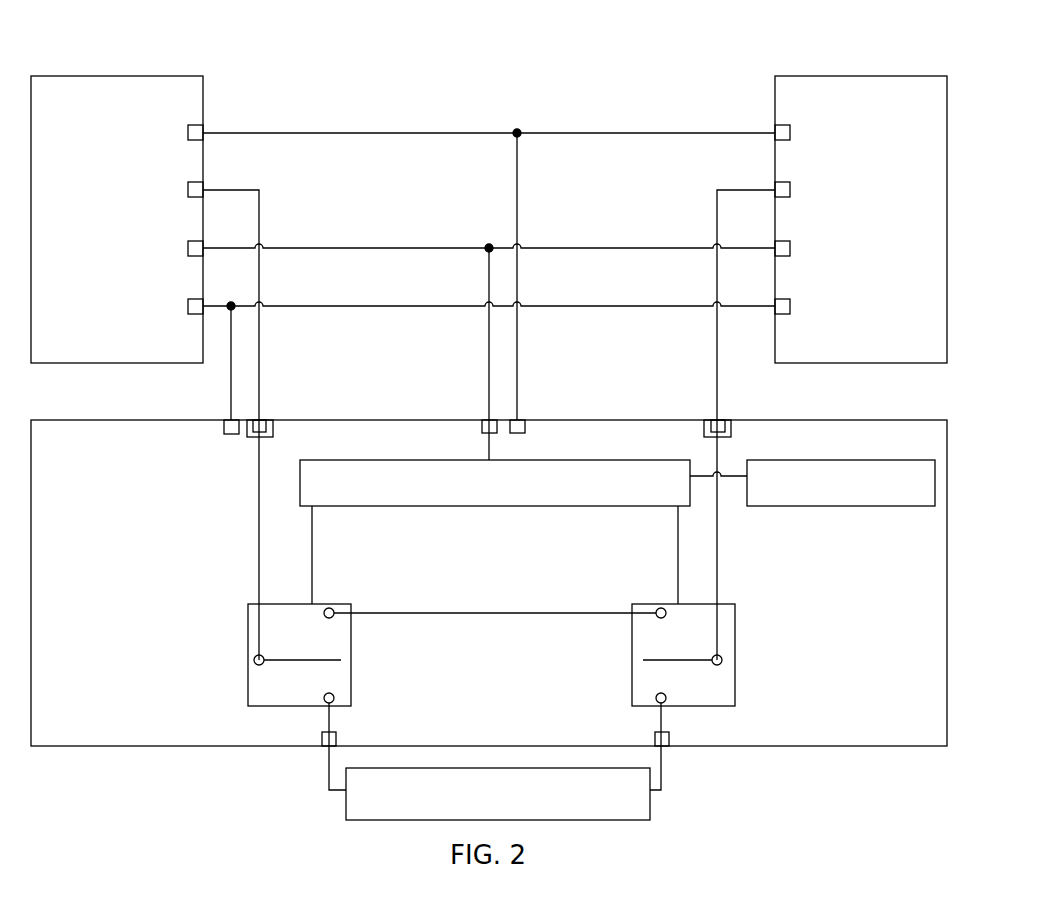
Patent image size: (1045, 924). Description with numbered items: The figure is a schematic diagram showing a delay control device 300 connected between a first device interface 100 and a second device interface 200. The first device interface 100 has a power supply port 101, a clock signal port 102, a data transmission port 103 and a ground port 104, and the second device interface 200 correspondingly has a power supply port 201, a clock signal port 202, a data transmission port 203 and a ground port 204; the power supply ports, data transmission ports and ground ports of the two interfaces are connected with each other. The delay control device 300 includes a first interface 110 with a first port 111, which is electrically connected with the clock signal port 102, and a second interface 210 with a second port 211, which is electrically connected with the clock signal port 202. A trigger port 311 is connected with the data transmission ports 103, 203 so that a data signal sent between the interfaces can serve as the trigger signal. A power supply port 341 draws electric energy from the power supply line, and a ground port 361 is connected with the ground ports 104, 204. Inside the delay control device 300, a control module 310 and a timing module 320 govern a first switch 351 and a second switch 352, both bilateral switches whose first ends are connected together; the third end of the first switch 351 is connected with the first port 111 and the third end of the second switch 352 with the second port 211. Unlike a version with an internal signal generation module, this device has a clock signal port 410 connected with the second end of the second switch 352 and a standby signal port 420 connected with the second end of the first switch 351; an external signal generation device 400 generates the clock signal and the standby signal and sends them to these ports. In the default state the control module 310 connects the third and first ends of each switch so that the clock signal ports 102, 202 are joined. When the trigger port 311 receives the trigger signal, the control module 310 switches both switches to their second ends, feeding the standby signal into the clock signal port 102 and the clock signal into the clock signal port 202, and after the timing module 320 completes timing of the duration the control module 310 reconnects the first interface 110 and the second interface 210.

The first device interface 100 is at (861, 219).
The power supply port 101 is at (786, 132).
The clock signal port 102 is at (786, 189).
The data transmission port 103 is at (786, 251).
The ground port 104 is at (786, 308).
The second device interface 200 is at (117, 219).
The power supply port 201 is at (197, 132).
The clock signal port 202 is at (197, 189).
The data transmission port 203 is at (197, 251).
The ground port 204 is at (197, 308).
The delay control device 300 is at (489, 583).
The second interface 210 is at (273, 432).
The second port 211 is at (262, 427).
The power supply port 341 is at (229, 431).
The trigger port 311 is at (487, 428).
The ground port 361 is at (522, 431).
The first interface 110 is at (704, 428).
The first port 111 is at (728, 432).
The control module 310 is at (495, 483).
The timing module 320 is at (841, 483).
The first switch 351 is at (735, 633).
The second switch 352 is at (248, 633).
The clock signal port 410 is at (337, 737).
The standby signal port 420 is at (655, 737).
The signal generation device 400 is at (498, 794).